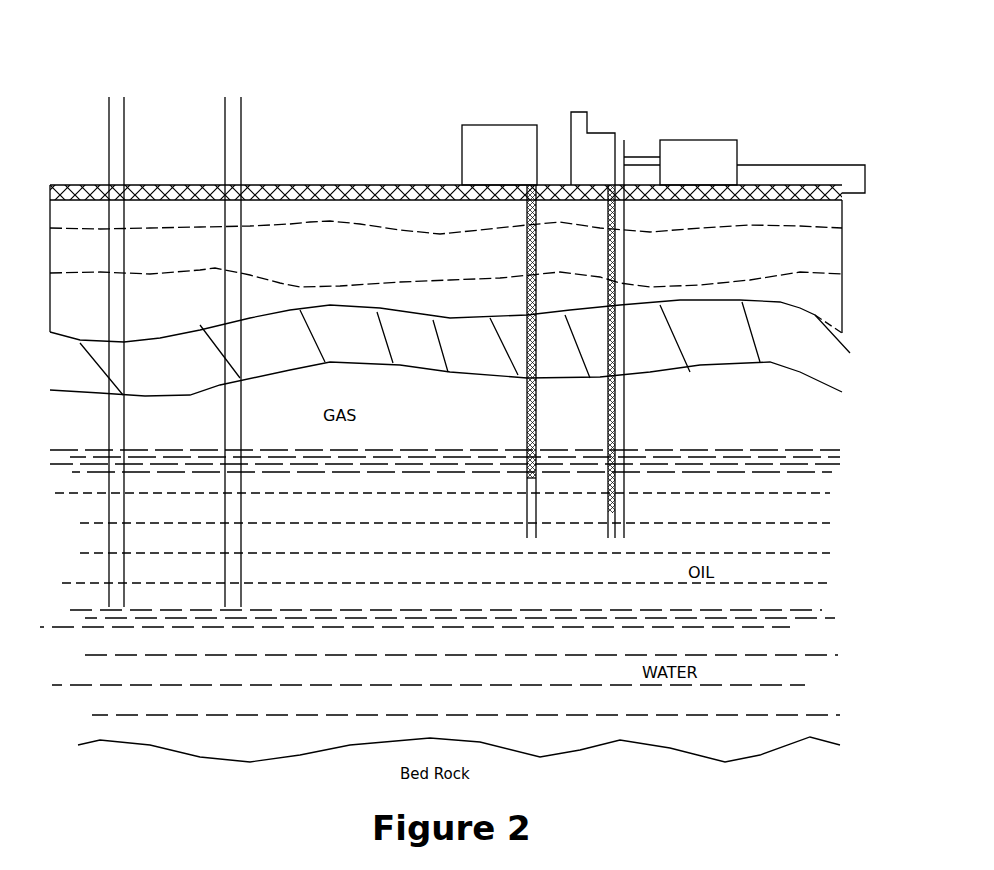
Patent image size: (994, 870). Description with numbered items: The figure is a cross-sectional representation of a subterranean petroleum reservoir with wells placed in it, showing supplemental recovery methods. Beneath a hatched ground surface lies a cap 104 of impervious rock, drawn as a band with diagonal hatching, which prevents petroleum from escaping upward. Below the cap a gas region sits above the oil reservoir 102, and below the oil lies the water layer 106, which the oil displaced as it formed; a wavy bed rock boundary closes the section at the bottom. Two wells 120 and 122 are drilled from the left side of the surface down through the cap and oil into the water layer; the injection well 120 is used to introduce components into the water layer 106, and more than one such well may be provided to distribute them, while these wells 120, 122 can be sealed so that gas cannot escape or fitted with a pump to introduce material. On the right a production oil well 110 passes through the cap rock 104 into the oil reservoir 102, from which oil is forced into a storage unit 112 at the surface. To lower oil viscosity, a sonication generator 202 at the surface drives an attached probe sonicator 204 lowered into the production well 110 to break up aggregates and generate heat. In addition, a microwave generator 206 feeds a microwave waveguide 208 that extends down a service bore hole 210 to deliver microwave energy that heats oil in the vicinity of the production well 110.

The oil reservoir 102 is at (442, 538).
The cap 104 is at (450, 348).
The water layer 106 is at (446, 685).
The production oil well 110 is at (618, 97).
The storage unit 112 is at (762, 166).
The injection well 120 is at (108, 88).
The well 122 is at (233, 78).
The sonication generator 202 is at (579, 111).
The probe sonicator 204 is at (607, 496).
The microwave generator 206 is at (499, 155).
The microwave waveguide 208 is at (527, 418).
The service bore hole 210 is at (527, 510).